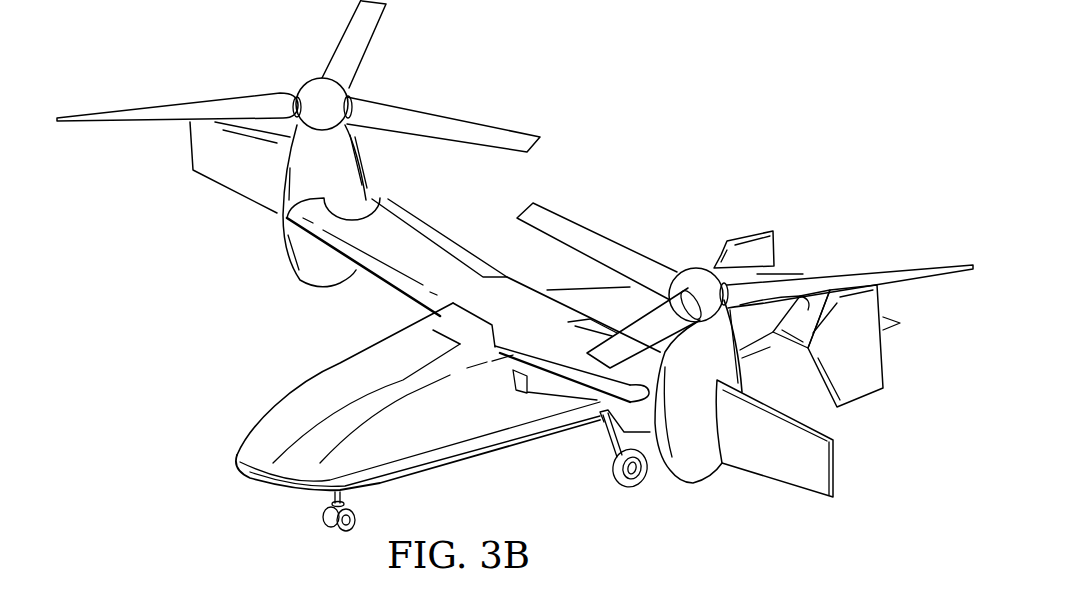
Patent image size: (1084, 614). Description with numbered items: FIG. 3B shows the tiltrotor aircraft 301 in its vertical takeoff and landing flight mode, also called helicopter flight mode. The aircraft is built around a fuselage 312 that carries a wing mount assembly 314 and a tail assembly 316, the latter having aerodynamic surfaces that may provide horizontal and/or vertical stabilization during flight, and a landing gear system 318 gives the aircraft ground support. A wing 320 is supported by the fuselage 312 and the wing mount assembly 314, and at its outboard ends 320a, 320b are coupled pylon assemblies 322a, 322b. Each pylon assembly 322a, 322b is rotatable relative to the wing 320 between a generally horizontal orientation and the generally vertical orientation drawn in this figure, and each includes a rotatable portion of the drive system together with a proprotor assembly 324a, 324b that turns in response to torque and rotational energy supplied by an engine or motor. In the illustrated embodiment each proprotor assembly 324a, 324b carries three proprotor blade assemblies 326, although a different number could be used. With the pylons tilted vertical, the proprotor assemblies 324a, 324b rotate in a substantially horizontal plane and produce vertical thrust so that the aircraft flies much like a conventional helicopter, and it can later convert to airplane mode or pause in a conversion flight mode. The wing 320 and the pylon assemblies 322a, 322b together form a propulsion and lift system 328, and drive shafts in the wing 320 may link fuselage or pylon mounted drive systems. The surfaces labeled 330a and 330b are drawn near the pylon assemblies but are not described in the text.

The tiltrotor aircraft 301 is at (665, 124).
The fuselage 312 is at (277, 407).
The wing mount assembly 314 is at (452, 325).
The tail assembly 316 is at (745, 240).
The landing gear system 318 is at (343, 533).
The wing 320 is at (518, 298).
The outboard end of wing 320a is at (586, 395).
The outboard end of wing 320b is at (363, 205).
The pylon assembly 322a is at (690, 478).
The pylon assembly 322b is at (307, 287).
The proprotor assembly 324a is at (691, 268).
The proprotor assembly 324b is at (312, 80).
The proprotor blade assembly 326 is at (143, 112).
The propulsion and lift system 328 is at (460, 266).
The tail surface a 330a is at (835, 455).
The tail surface b 330b is at (225, 177).